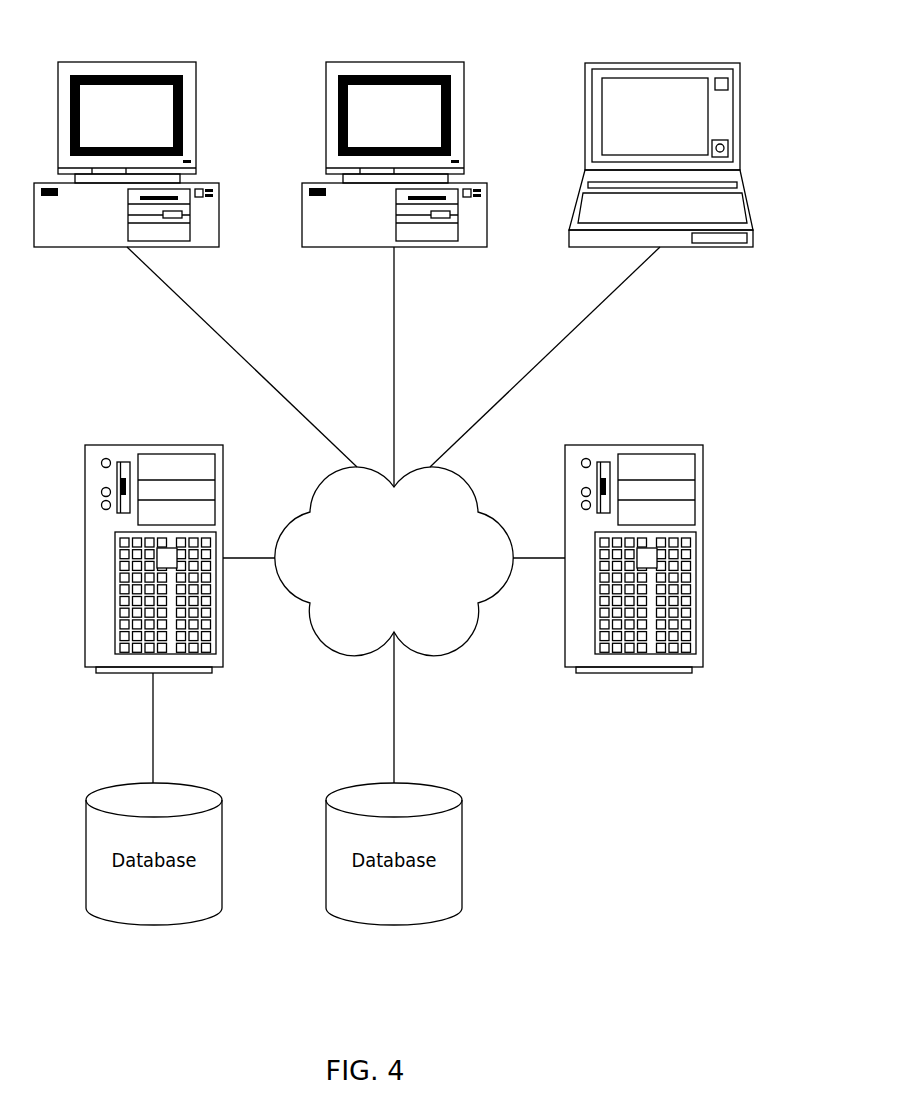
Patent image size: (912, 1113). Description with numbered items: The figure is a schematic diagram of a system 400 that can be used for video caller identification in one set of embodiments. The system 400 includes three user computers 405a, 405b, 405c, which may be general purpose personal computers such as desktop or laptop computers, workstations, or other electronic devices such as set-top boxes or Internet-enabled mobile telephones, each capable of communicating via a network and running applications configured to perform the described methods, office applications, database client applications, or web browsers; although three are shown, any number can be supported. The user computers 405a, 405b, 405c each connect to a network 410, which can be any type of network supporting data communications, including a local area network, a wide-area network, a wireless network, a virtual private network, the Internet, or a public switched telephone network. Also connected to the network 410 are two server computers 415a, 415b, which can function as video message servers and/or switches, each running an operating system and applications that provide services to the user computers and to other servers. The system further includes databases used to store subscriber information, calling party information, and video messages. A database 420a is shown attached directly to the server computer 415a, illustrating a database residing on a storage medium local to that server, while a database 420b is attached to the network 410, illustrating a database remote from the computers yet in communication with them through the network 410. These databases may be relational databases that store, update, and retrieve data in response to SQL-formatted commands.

The system 400 is at (393, 511).
The user computer 405a is at (219, 200).
The user computer 405b is at (302, 199).
The user computer 405c is at (585, 155).
The network 410 is at (427, 650).
The server computer 415a is at (85, 558).
The server computer 415b is at (703, 558).
The database 420a is at (153, 922).
The database 420b is at (393, 922).